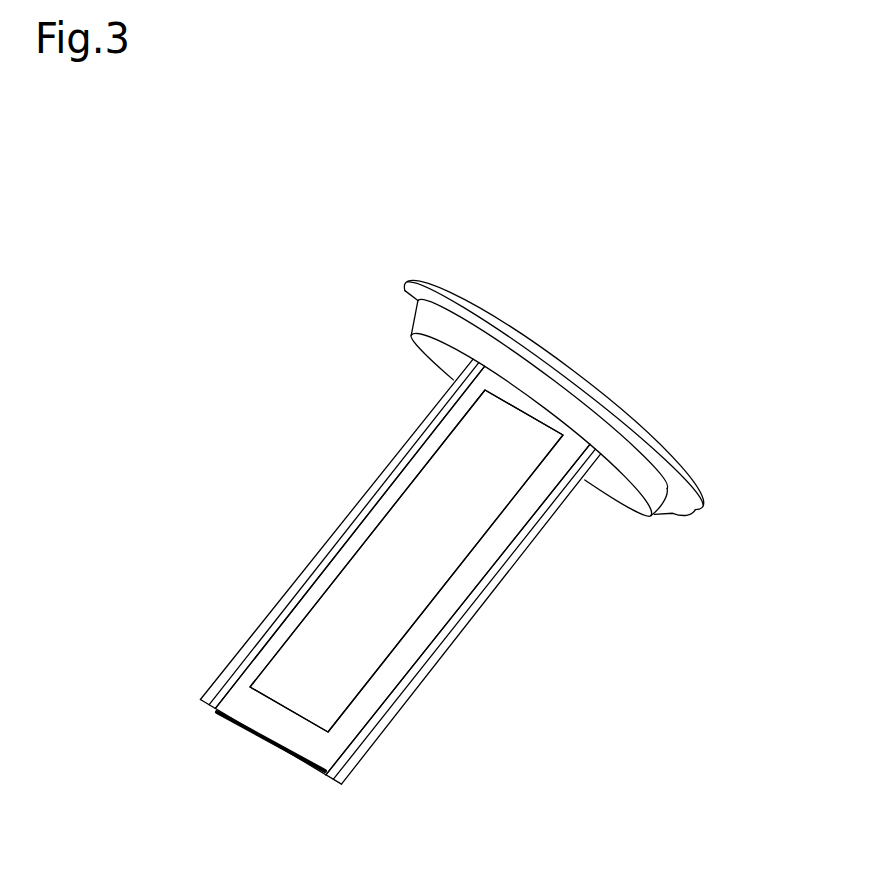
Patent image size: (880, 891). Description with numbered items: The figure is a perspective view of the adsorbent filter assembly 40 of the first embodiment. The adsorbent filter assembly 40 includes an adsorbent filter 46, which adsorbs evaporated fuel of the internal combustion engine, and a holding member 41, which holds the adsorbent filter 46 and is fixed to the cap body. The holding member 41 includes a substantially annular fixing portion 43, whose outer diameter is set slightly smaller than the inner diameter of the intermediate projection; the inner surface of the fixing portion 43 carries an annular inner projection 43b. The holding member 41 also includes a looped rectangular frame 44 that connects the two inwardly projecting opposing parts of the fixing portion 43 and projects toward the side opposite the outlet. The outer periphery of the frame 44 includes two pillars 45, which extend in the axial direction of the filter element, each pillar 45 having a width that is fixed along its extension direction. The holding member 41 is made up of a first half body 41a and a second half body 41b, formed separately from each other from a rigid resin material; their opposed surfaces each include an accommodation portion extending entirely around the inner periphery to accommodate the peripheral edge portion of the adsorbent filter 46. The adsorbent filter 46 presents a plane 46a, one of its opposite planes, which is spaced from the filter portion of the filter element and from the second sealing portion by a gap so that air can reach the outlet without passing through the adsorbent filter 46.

The adsorbent filter assembly 40 is at (525, 304).
The holding member 41 is at (738, 331).
The first half body 41a is at (617, 395).
The second half body 41b is at (675, 453).
The fixing portion 43 is at (421, 296).
The inner projection 43b is at (415, 322).
The frame 44 is at (514, 398).
The pillar 45 is at (328, 550).
The adsorbent filter 46 is at (437, 466).
The plane 46a is at (298, 652).